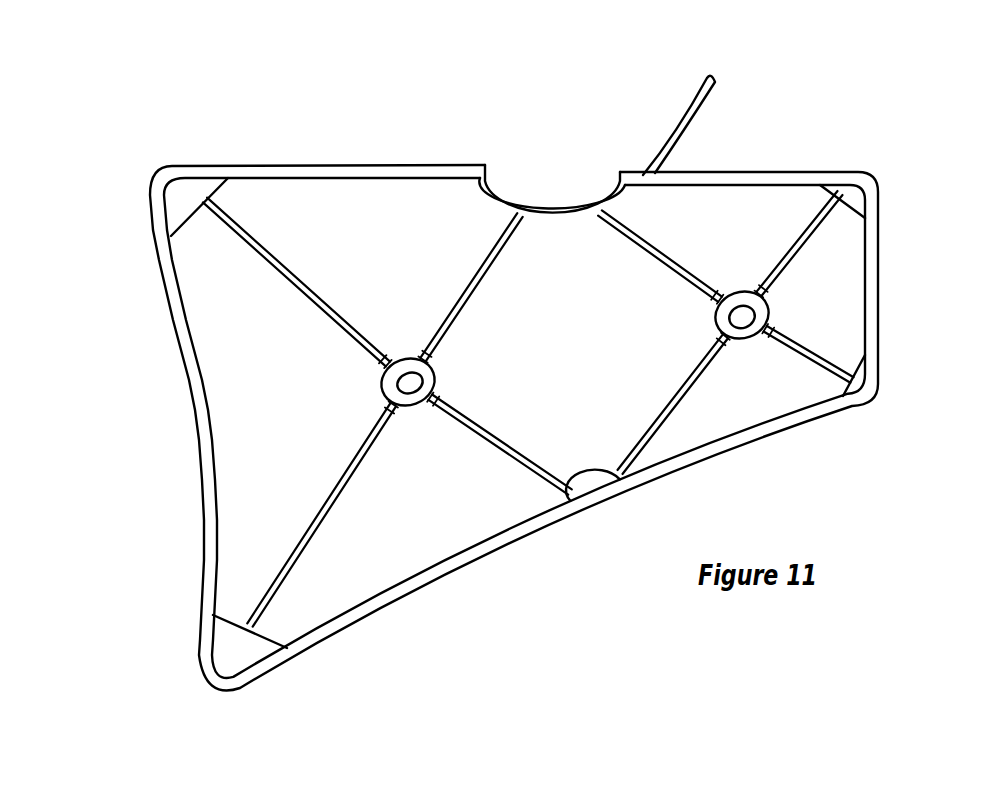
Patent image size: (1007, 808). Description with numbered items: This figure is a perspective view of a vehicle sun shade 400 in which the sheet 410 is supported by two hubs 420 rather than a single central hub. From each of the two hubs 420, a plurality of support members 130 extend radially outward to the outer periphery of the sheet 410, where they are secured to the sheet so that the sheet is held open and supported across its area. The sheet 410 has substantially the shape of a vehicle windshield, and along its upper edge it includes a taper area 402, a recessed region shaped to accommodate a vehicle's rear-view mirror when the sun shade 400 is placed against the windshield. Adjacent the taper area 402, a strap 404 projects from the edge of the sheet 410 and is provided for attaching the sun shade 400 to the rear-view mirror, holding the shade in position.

The sun shade 400 is at (150, 115).
The sheet 410 is at (298, 406).
The taper area 402 is at (505, 197).
The strap 404 is at (680, 125).
The support members 130 is at (462, 300).
The hubs 420 is at (437, 378).